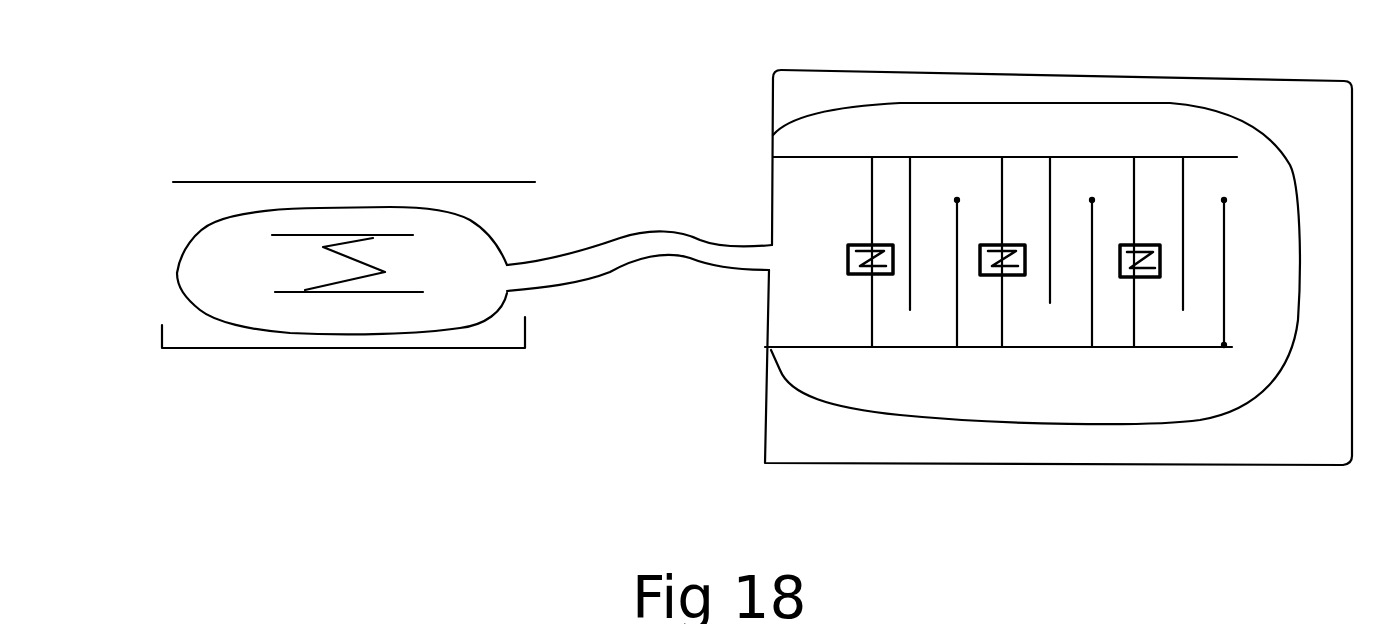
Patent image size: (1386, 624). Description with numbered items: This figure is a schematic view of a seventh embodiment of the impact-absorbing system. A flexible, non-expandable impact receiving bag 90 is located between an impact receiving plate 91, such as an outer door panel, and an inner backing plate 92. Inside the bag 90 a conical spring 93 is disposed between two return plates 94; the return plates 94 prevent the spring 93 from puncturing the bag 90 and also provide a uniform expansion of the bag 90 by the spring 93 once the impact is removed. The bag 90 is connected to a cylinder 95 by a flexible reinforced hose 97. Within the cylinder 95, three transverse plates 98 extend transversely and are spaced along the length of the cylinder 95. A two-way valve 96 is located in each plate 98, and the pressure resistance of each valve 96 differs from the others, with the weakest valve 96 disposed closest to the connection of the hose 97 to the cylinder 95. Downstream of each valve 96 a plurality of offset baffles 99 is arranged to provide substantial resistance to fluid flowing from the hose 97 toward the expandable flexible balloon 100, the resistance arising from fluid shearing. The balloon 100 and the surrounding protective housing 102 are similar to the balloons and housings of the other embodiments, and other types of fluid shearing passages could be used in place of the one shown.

The impact receiving bag 90 is at (176, 273).
The impact receiving plate 91 is at (331, 182).
The inner backing plate 92 is at (317, 348).
The conical spring 93 is at (345, 262).
The return plates 94 is at (405, 237).
The cylinder 95 is at (923, 348).
The two-way valve 96 is at (1022, 255).
The flexible reinforced hose 97 is at (600, 280).
The transverse plates 98 is at (1132, 182).
The offset baffles 99 is at (1195, 287).
The expandable flexible balloon 100 is at (1137, 425).
The protective housing 102 is at (942, 468).